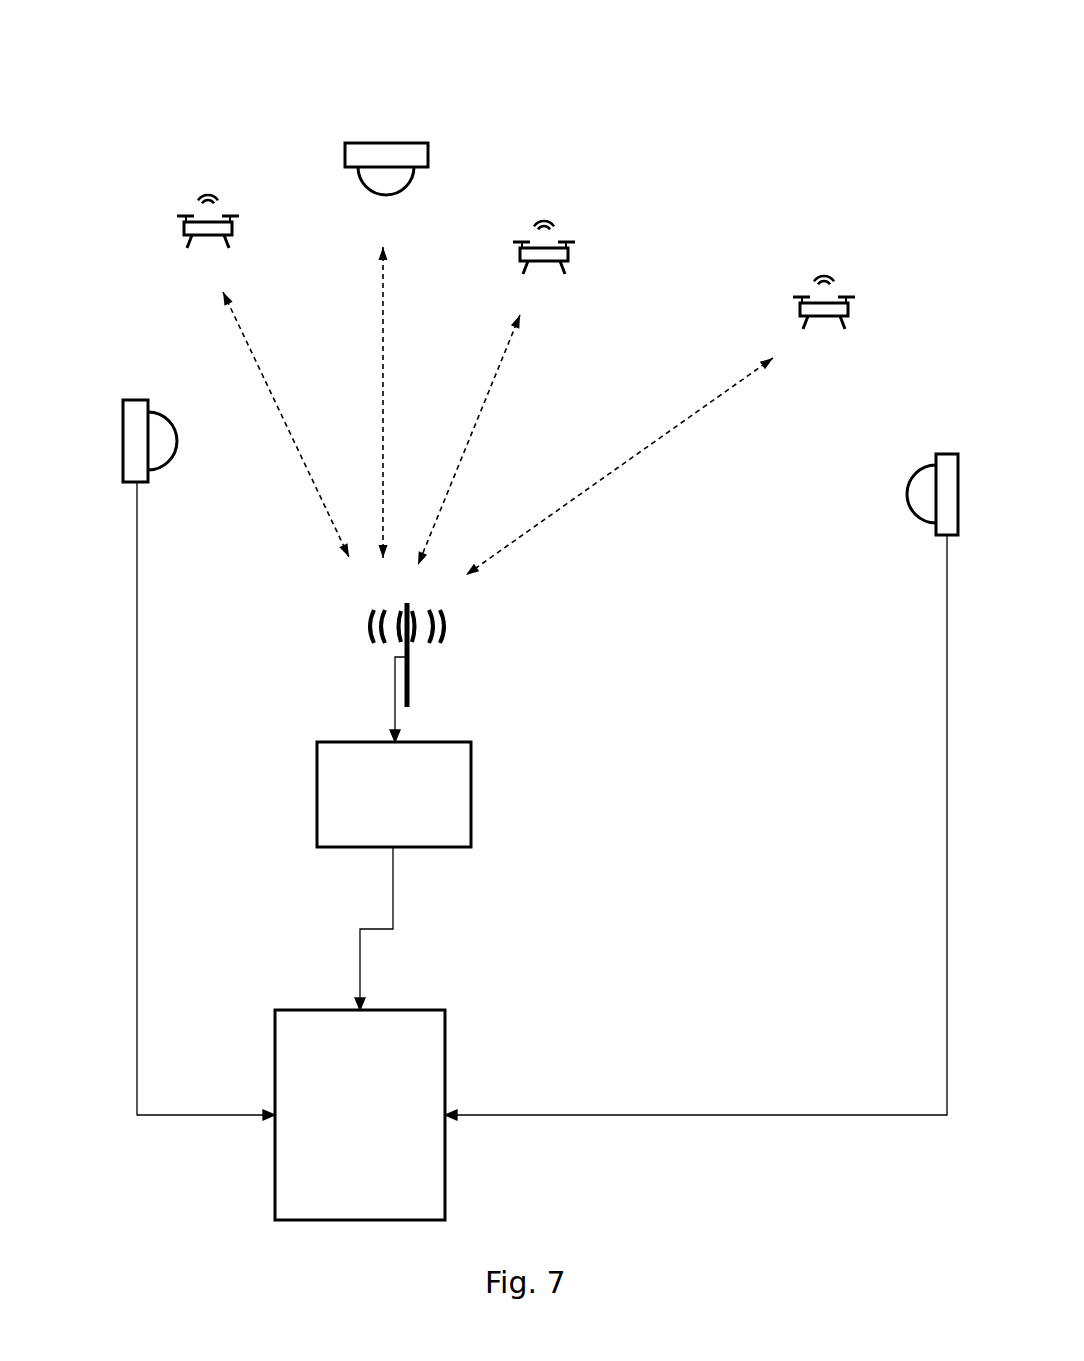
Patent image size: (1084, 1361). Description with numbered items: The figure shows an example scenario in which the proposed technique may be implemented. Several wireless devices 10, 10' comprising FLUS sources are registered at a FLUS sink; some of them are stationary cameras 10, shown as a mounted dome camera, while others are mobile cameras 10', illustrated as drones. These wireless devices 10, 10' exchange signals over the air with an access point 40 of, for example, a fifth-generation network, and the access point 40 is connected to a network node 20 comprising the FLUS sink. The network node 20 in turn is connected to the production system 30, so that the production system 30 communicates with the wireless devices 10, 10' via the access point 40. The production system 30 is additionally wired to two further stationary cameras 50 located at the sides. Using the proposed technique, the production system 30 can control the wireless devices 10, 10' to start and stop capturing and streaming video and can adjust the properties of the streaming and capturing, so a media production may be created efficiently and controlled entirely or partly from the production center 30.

The wireless device 10 is at (370, 105).
The mobile camera 10' is at (484, 205).
The network node 20 is at (371, 790).
The production system 30 is at (318, 1060).
The access point 40 is at (357, 620).
The stationary camera 50 is at (118, 392).